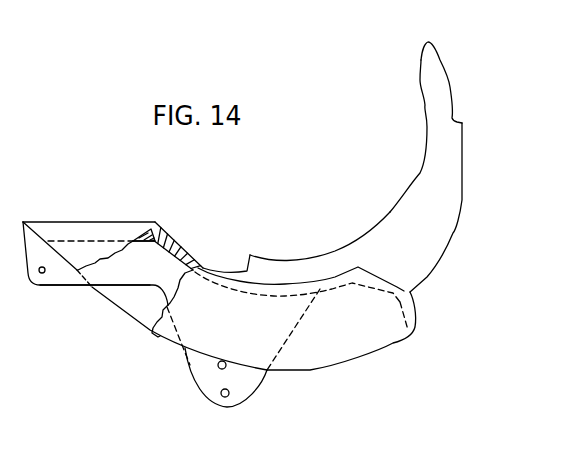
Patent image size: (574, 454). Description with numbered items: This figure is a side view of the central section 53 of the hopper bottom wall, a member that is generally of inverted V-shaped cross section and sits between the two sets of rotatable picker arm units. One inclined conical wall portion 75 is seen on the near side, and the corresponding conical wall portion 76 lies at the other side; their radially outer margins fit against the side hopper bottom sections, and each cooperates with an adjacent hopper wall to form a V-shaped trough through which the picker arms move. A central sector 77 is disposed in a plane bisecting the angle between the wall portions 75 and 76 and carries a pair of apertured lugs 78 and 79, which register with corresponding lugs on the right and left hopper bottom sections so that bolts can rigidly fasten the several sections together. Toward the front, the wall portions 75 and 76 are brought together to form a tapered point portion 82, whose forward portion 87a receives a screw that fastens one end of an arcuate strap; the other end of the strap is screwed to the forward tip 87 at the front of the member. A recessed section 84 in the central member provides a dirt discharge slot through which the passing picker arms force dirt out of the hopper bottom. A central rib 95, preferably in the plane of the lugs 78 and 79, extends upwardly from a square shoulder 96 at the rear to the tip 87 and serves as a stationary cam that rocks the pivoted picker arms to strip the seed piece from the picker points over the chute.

The central section of the hopper bottom wall 53 is at (278, 245).
The conical wall portion 75 is at (332, 347).
The conical wall portion 76 is at (133, 303).
The central sector 77 is at (157, 258).
The apertured lug 78 is at (58, 275).
The apertured lug 79 is at (250, 381).
The tapered point portion 82 is at (62, 215).
The recessed section 84 is at (220, 361).
The forward tip 87 is at (430, 55).
The forward portion of the tapered point portion 87a is at (128, 221).
The central rib 95 is at (378, 222).
The square shoulder 96 is at (248, 271).